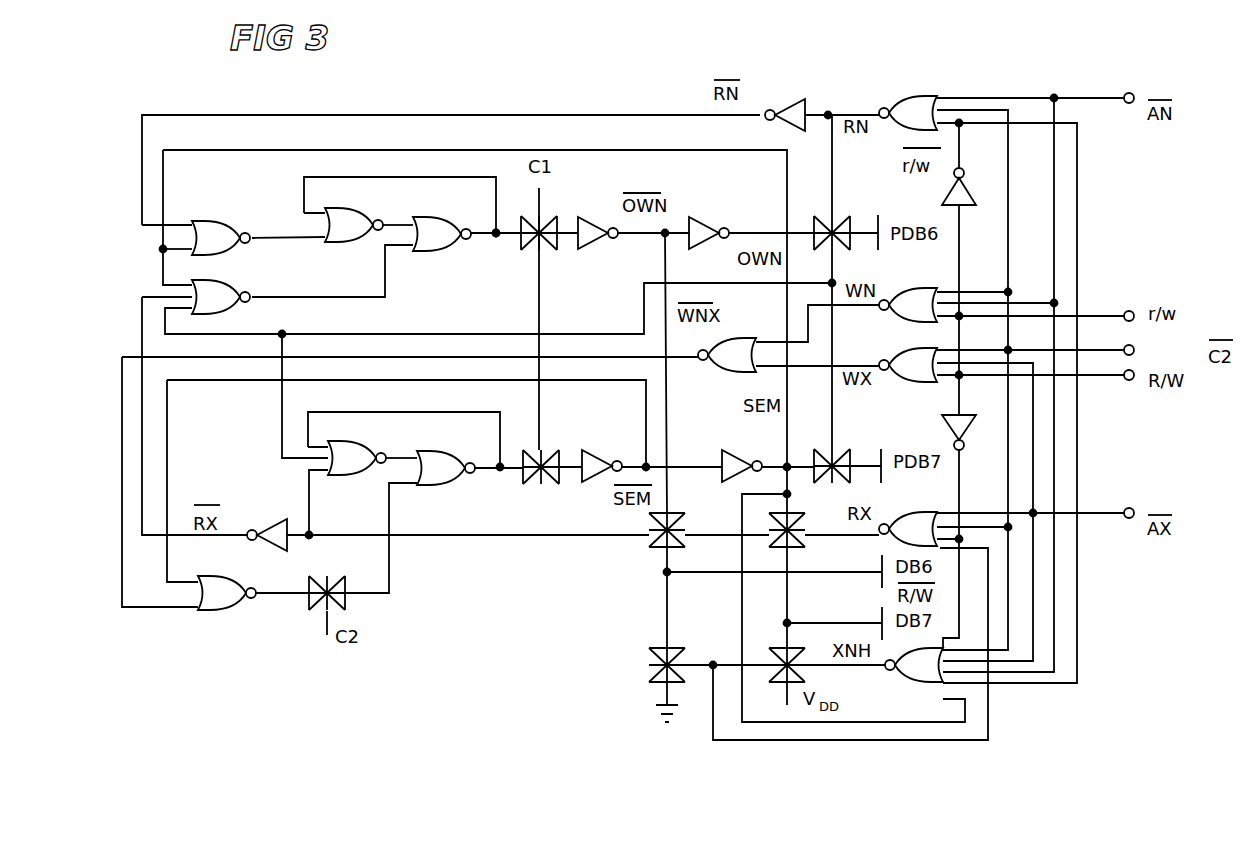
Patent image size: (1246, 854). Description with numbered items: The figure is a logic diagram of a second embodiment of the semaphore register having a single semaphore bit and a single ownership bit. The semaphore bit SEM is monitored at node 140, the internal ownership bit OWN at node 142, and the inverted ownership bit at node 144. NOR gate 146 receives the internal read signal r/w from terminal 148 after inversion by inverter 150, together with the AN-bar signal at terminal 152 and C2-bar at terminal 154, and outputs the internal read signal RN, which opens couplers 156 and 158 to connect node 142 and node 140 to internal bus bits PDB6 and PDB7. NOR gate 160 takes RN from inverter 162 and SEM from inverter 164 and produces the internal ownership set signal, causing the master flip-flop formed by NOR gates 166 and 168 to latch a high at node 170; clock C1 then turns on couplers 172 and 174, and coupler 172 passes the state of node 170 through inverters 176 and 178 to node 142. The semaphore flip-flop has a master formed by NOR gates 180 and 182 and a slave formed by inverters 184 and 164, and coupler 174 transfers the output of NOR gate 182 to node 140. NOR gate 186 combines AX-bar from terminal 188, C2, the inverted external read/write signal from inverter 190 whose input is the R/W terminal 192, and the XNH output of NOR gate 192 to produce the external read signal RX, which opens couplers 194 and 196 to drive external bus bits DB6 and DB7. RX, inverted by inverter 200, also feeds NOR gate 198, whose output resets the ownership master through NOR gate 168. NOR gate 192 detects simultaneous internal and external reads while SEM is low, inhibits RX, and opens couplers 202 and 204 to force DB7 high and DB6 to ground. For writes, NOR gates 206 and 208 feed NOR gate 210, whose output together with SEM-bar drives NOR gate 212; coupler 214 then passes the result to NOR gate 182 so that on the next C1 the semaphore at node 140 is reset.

The semaphore bit node 140 is at (796, 460).
The internal ownership bit node 142 is at (744, 230).
The inverted ownership bit node 144 is at (666, 230).
The NOR gate 146 is at (918, 95).
The terminal 148 is at (1126, 311).
The inverter 150 is at (946, 198).
The terminal 152 is at (1126, 91).
The terminal 154 is at (1205, 357).
The coupler 156 is at (857, 217).
The coupler 158 is at (855, 454).
The NOR gate 160 is at (223, 219).
The inverter 162 is at (792, 99).
The inverter 164 is at (736, 448).
The NOR gate 166 is at (366, 241).
The NOR gate 168 is at (449, 218).
The node 170 is at (494, 238).
The coupler 172 is at (547, 252).
The coupler 174 is at (548, 486).
The inverter 176 is at (600, 242).
The inverter 178 is at (708, 242).
The NOR gate 180 is at (369, 474).
The NOR gate 182 is at (464, 484).
The inverter 184 is at (598, 448).
The NOR gate 186 is at (921, 511).
The terminal 188 is at (1126, 506).
The inverter 190 is at (950, 430).
The NOR gate / terminal 192 is at (1110, 378).
The coupler 194 is at (652, 554).
The coupler 196 is at (802, 549).
The NOR gate 198 is at (230, 282).
The inverter 200 is at (277, 518).
The coupler 202 is at (808, 676).
The coupler 204 is at (655, 676).
The NOR gate 206 is at (906, 288).
The NOR gate 208 is at (934, 383).
The NOR gate 210 is at (732, 340).
The NOR gate 212 is at (232, 612).
The coupler 214 is at (352, 560).